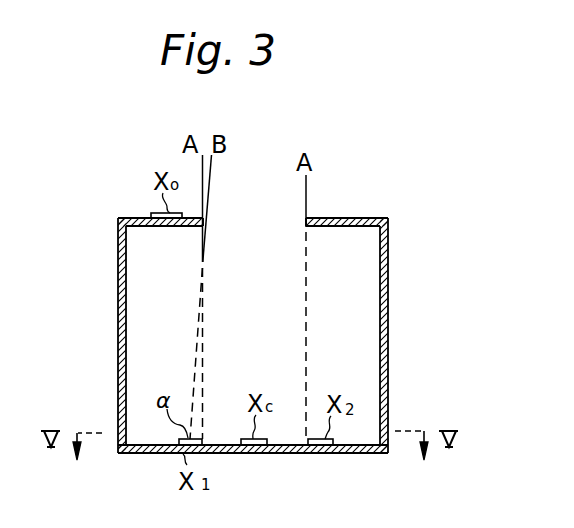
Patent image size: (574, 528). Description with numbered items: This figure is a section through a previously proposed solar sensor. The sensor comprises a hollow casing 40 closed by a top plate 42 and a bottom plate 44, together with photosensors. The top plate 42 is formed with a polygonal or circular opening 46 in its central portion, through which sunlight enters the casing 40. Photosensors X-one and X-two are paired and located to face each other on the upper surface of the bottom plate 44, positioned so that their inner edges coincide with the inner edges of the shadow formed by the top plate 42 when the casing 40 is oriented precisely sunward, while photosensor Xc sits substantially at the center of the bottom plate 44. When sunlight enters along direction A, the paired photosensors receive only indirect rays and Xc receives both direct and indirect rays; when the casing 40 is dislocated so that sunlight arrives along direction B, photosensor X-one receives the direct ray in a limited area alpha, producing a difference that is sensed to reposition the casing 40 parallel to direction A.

The hollow casing 40 is at (388, 273).
The top plate 42 is at (137, 218).
The bottom plate 44 is at (294, 453).
The opening 46 is at (249, 223).